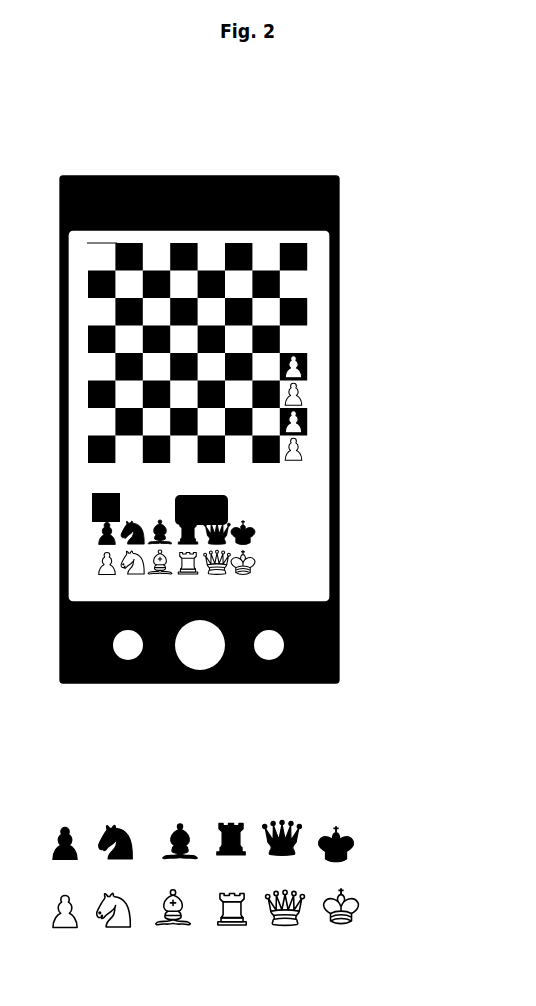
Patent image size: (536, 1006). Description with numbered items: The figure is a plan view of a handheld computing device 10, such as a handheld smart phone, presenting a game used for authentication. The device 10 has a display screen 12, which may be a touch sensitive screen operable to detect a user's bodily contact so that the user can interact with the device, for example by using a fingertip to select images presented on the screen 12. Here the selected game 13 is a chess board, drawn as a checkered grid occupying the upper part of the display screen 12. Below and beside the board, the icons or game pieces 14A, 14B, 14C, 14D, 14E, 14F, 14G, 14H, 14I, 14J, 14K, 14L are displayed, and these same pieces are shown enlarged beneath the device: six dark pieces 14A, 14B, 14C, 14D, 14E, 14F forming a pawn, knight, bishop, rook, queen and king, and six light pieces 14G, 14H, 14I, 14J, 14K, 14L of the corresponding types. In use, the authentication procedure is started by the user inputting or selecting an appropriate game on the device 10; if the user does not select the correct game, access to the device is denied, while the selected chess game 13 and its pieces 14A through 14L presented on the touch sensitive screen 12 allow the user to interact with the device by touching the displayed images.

The handheld computing device 10 is at (270, 176).
The display screen 12 is at (310, 333).
The selected game 13 is at (235, 282).
The game piece 14A is at (62, 820).
The game piece 14B is at (115, 821).
The game piece 14C is at (176, 822).
The game piece 14D is at (230, 818).
The game piece 14E is at (283, 820).
The game piece 14F is at (338, 822).
The game piece 14G is at (63, 933).
The game piece 14H is at (117, 932).
The game piece 14I is at (172, 930).
The game piece 14J is at (227, 930).
The game piece 14K is at (283, 930).
The game piece 14L is at (340, 928).